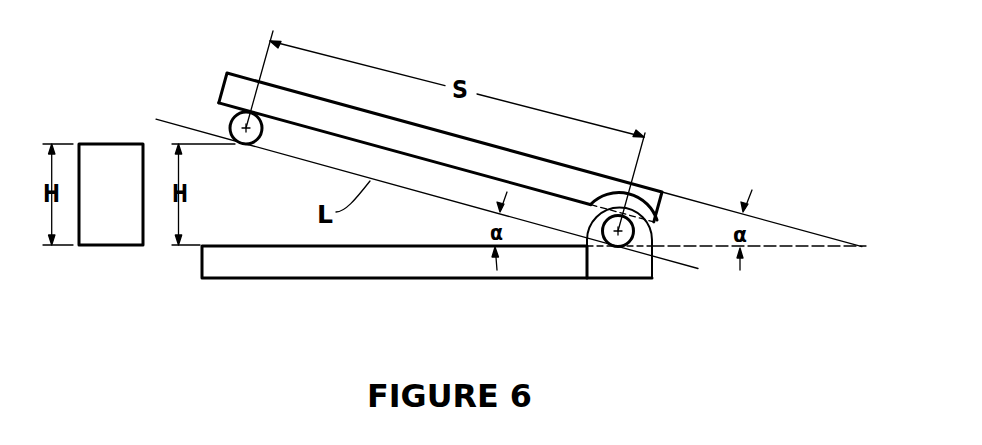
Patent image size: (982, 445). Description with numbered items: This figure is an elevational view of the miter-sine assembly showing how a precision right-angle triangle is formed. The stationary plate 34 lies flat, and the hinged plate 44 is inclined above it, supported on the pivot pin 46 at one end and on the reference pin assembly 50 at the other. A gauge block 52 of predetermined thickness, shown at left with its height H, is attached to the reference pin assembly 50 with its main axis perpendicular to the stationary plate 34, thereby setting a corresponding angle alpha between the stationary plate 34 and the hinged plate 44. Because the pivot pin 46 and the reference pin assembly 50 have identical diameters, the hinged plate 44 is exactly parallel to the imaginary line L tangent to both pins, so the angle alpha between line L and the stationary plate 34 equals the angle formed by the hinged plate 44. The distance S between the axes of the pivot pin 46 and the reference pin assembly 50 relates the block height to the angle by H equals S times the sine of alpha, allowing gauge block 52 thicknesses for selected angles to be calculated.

The stationary plate 34 is at (414, 262).
The hinged plate 44 is at (640, 192).
The pivot pin 46 is at (630, 234).
The reference pin assembly 50 is at (232, 129).
The gauge block 52 is at (123, 172).